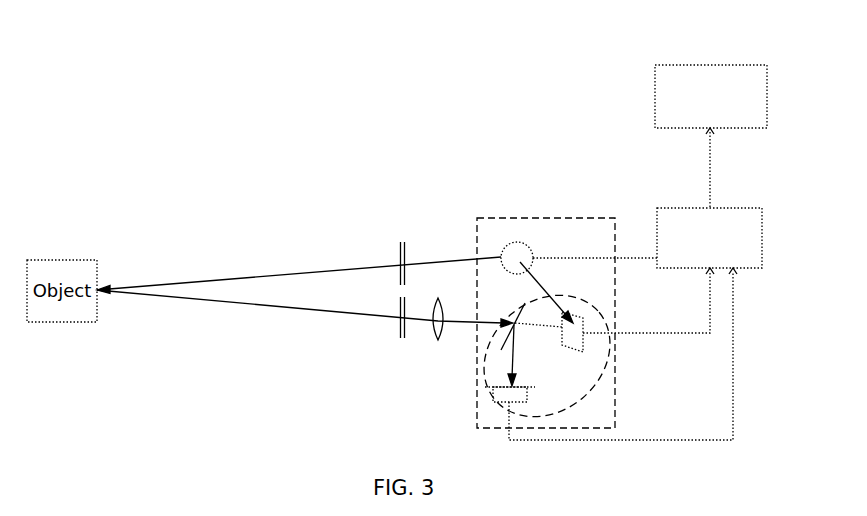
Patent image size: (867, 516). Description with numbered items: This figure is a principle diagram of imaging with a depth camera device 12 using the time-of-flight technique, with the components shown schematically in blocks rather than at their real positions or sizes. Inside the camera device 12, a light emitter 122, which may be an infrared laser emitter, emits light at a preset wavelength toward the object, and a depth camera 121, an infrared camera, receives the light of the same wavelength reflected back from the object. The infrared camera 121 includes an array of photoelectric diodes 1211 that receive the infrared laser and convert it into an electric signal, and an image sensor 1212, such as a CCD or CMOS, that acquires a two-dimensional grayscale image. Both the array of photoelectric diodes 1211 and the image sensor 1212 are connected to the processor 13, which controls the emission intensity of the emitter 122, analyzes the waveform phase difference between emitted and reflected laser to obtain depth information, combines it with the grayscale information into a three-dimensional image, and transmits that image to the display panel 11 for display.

The display panel 11 is at (722, 72).
The camera device 12 is at (562, 283).
The processor 13 is at (751, 198).
The depth camera 121 is at (503, 366).
The light emitter 122 is at (435, 225).
The array of photoelectric diodes 1211 is at (585, 338).
The image sensor 1212 is at (528, 393).